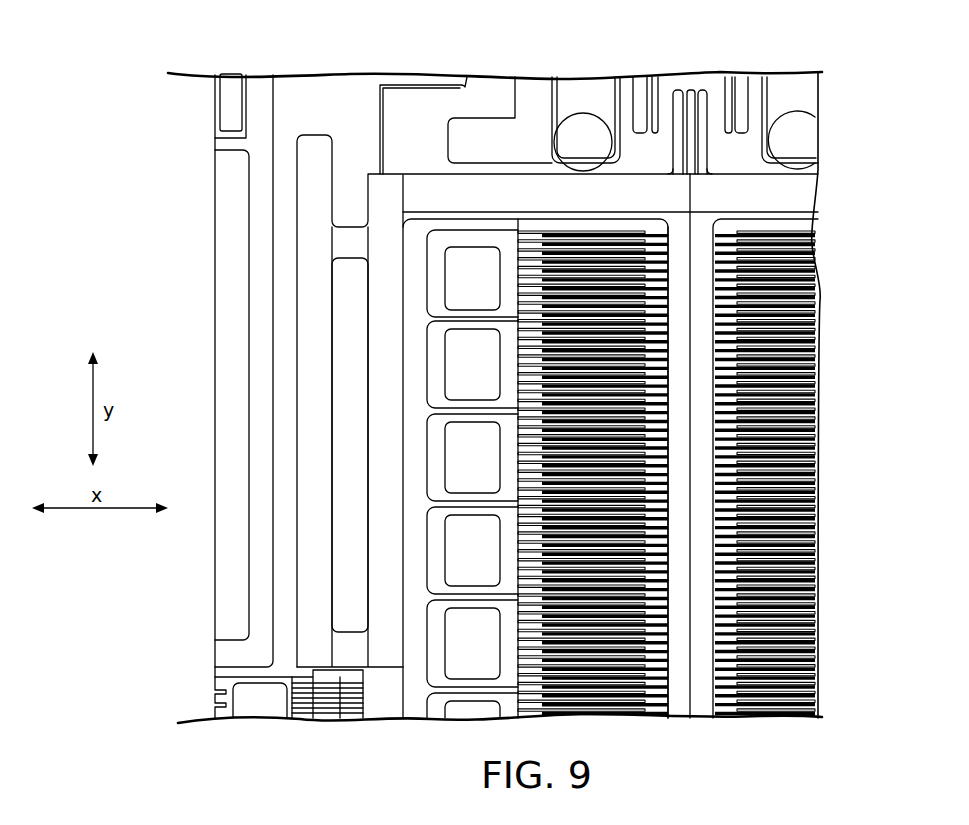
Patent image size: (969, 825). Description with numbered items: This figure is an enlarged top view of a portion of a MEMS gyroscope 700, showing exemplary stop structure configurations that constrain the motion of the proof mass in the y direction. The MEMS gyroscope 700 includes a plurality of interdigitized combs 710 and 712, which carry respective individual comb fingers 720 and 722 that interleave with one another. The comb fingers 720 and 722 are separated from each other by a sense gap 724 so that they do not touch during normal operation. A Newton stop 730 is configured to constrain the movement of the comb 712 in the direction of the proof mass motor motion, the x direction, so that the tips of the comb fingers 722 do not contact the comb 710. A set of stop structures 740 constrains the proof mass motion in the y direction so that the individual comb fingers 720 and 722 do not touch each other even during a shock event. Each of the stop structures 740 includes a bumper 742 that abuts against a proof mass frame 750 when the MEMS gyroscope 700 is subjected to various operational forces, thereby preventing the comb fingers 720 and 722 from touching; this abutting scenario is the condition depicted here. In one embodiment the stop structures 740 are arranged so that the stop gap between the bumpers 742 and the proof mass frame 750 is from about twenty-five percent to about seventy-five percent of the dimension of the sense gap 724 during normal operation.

The MEMS gyroscope 700 is at (138, 294).
The interdigitized comb 710 is at (497, 240).
The interdigitized comb 712 is at (677, 240).
The comb fingers 720 is at (535, 227).
The comb fingers 722 is at (660, 288).
The sense gap 724 is at (660, 288).
The Newton stop 730 is at (746, 68).
The stop structures 740 is at (620, 137).
The bumper 742 is at (568, 168).
The proof mass frame 750 is at (445, 183).